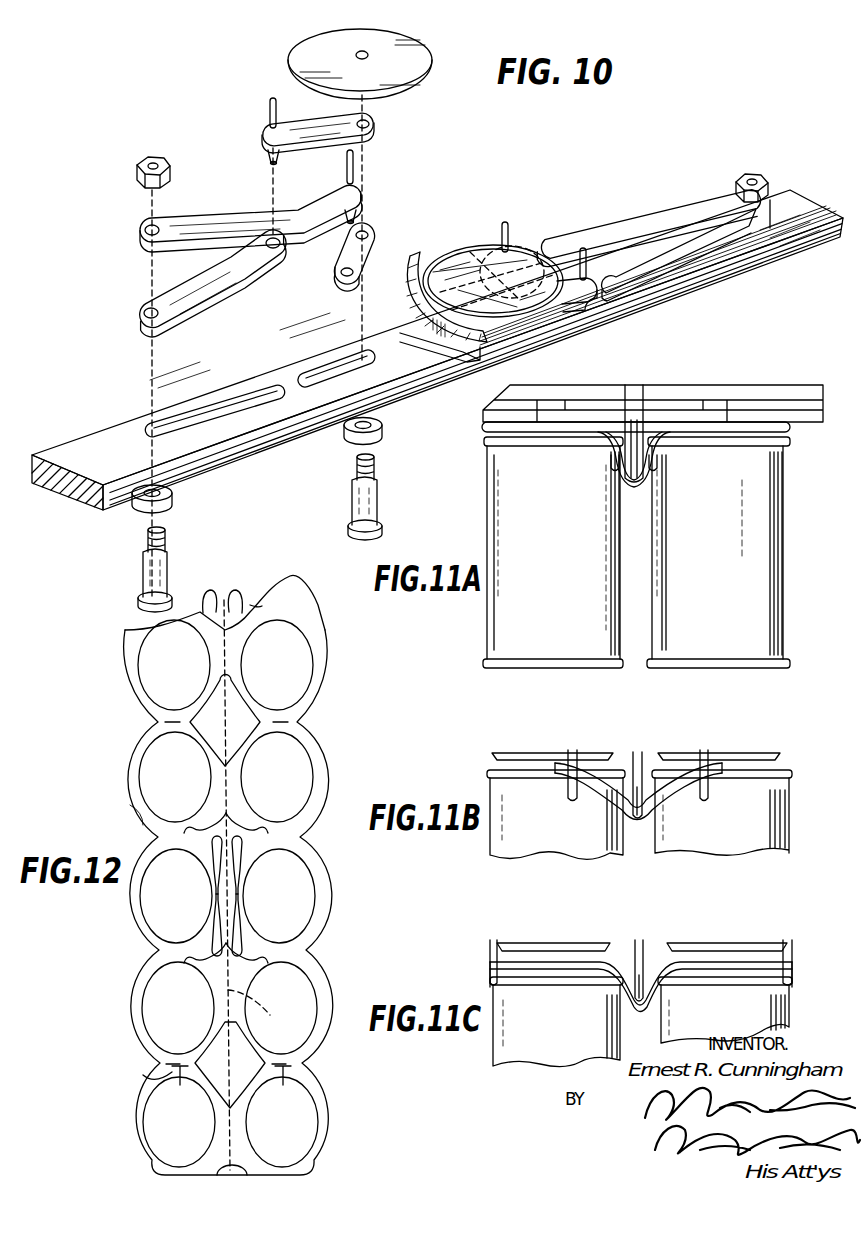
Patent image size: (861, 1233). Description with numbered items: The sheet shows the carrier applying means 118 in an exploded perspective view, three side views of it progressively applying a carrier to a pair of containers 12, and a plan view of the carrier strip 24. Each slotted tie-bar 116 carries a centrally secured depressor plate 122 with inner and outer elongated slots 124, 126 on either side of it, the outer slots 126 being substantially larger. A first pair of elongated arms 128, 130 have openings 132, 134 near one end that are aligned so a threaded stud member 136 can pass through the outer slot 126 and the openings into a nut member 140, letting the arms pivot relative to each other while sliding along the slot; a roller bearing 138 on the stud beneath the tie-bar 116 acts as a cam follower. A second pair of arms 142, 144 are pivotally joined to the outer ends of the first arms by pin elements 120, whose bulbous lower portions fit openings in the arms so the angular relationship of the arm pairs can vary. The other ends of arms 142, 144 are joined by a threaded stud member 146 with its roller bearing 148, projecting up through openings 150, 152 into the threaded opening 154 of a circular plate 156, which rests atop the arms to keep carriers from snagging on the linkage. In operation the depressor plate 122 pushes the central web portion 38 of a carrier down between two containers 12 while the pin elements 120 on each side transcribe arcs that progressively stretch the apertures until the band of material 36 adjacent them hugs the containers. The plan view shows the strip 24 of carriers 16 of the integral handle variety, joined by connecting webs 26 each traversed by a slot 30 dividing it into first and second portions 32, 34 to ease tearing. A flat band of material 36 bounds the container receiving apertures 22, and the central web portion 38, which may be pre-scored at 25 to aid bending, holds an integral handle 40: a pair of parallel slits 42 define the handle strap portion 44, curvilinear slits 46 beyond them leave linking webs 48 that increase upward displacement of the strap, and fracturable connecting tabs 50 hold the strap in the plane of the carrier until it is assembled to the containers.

In FIG. 11A, the container 12 is at (683, 648).
In FIG. 11B, the container 12 is at (577, 838).
In FIG. 11C, the container 12 is at (684, 1017).
In FIG. 12, the carrier 16 is at (313, 606).
In FIG. 12, the aperture 22 is at (147, 1127).
In FIG. 12, the strip 24 is at (124, 936).
In FIG. 12, the pre-score 25 is at (259, 1011).
In FIG. 12, the connecting web 26 is at (150, 722).
In FIG. 12, the slot 30 is at (180, 1072).
In FIG. 12, the first portion 32 is at (160, 1077).
In FIG. 12, the second portion 34 is at (207, 1072).
In FIG. 11B, the band of material 36 is at (603, 785).
In FIG. 11C, the band of material 36 is at (550, 975).
In FIG. 12, the band of material 36 is at (143, 815).
In FIG. 11A, the central web portion 38 is at (633, 488).
In FIG. 12, the central web portion 38 is at (240, 808).
In FIG. 12, the integral handle 40 is at (259, 913).
In FIG. 12, the slit 42 is at (220, 855).
In FIG. 12, the handle strap portion 44 is at (227, 935).
In FIG. 12, the slit 46 is at (245, 827).
In FIG. 12, the linking web 48 is at (213, 823).
In FIG. 12, the connecting tab 50 is at (215, 893).
In FIG. 10, the tie-bar 116 is at (74, 454).
In FIG. 10, the carrier applying means 118 is at (573, 224).
In FIG. 10, the pin element 120 is at (269, 122).
In FIG. 11A, the pin element 120 is at (603, 448).
In FIG. 11B, the pin element 120 is at (570, 753).
In FIG. 11C, the pin element 120 is at (491, 950).
In FIG. 10, the depressor plate 122 is at (407, 270).
In FIG. 11A, the depressor plate 122 is at (633, 397).
In FIG. 11B, the depressor plate 122 is at (642, 765).
In FIG. 11C, the depressor plate 122 is at (643, 960).
In FIG. 10, the inner slot 124 is at (320, 373).
In FIG. 10, the outer slot 126 is at (203, 419).
In FIG. 10, the arm 128 is at (232, 214).
In FIG. 10, the arm 130 is at (210, 274).
In FIG. 10, the opening 132 is at (146, 312).
In FIG. 10, the opening 134 is at (148, 225).
In FIG. 10, the threaded stud member 136 is at (164, 575).
In FIG. 10, the roller bearing 138 is at (176, 505).
In FIG. 10, the nut member 140 is at (168, 171).
In FIG. 10, the arm 142 is at (472, 252).
In FIG. 10, the arm 144 is at (307, 125).
In FIG. 10, the threaded stud member 146 is at (372, 493).
In FIG. 10, the roller bearing 148 is at (383, 438).
In FIG. 10, the opening 150 is at (366, 228).
In FIG. 10, the opening 152 is at (369, 121).
In FIG. 10, the threaded opening 154 is at (356, 53).
In FIG. 10, the circular plate 156 is at (405, 48).